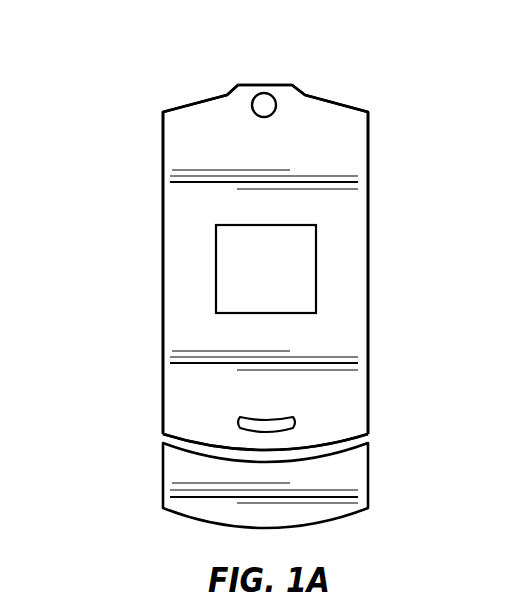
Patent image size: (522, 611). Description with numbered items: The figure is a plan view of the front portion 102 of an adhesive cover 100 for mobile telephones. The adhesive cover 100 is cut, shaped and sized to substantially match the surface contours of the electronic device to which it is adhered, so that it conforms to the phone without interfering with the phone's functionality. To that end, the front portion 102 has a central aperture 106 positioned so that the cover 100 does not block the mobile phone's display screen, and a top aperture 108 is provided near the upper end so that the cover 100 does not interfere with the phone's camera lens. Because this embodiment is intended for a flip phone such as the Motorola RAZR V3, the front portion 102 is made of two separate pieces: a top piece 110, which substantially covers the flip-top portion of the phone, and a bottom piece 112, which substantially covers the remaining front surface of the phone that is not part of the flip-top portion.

The adhesive cover 100 is at (158, 47).
The front portion 102 is at (123, 267).
The central aperture 106 is at (302, 268).
The top aperture 108 is at (264, 103).
The top piece 110 is at (142, 390).
The bottom piece 112 is at (142, 482).